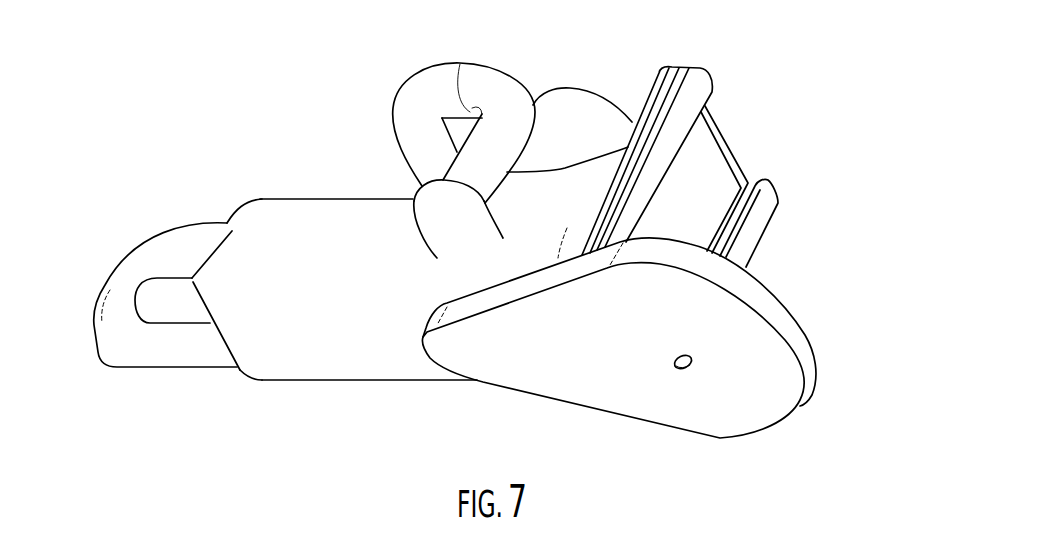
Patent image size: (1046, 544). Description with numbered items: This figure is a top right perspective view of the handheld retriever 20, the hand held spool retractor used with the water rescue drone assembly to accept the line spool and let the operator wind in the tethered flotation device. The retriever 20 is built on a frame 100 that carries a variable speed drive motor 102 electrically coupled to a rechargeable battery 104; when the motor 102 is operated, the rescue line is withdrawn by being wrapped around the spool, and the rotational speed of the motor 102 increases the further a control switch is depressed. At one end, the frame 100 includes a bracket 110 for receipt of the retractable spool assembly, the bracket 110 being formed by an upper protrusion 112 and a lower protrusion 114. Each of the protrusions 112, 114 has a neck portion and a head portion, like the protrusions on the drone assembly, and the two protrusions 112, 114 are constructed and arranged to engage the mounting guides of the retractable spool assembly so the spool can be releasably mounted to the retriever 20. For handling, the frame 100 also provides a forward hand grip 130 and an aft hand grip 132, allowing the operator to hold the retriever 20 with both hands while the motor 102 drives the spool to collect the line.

The handheld retriever 20 is at (843, 222).
The frame 100 is at (373, 367).
The variable speed drive motor 102 is at (583, 90).
The rechargeable battery 104 is at (282, 222).
The bracket 110 is at (732, 140).
The upper protrusion 112 is at (708, 78).
The lower protrusion 114 is at (777, 188).
The forward hand grip 130 is at (470, 63).
The aft hand grip 132 is at (95, 296).